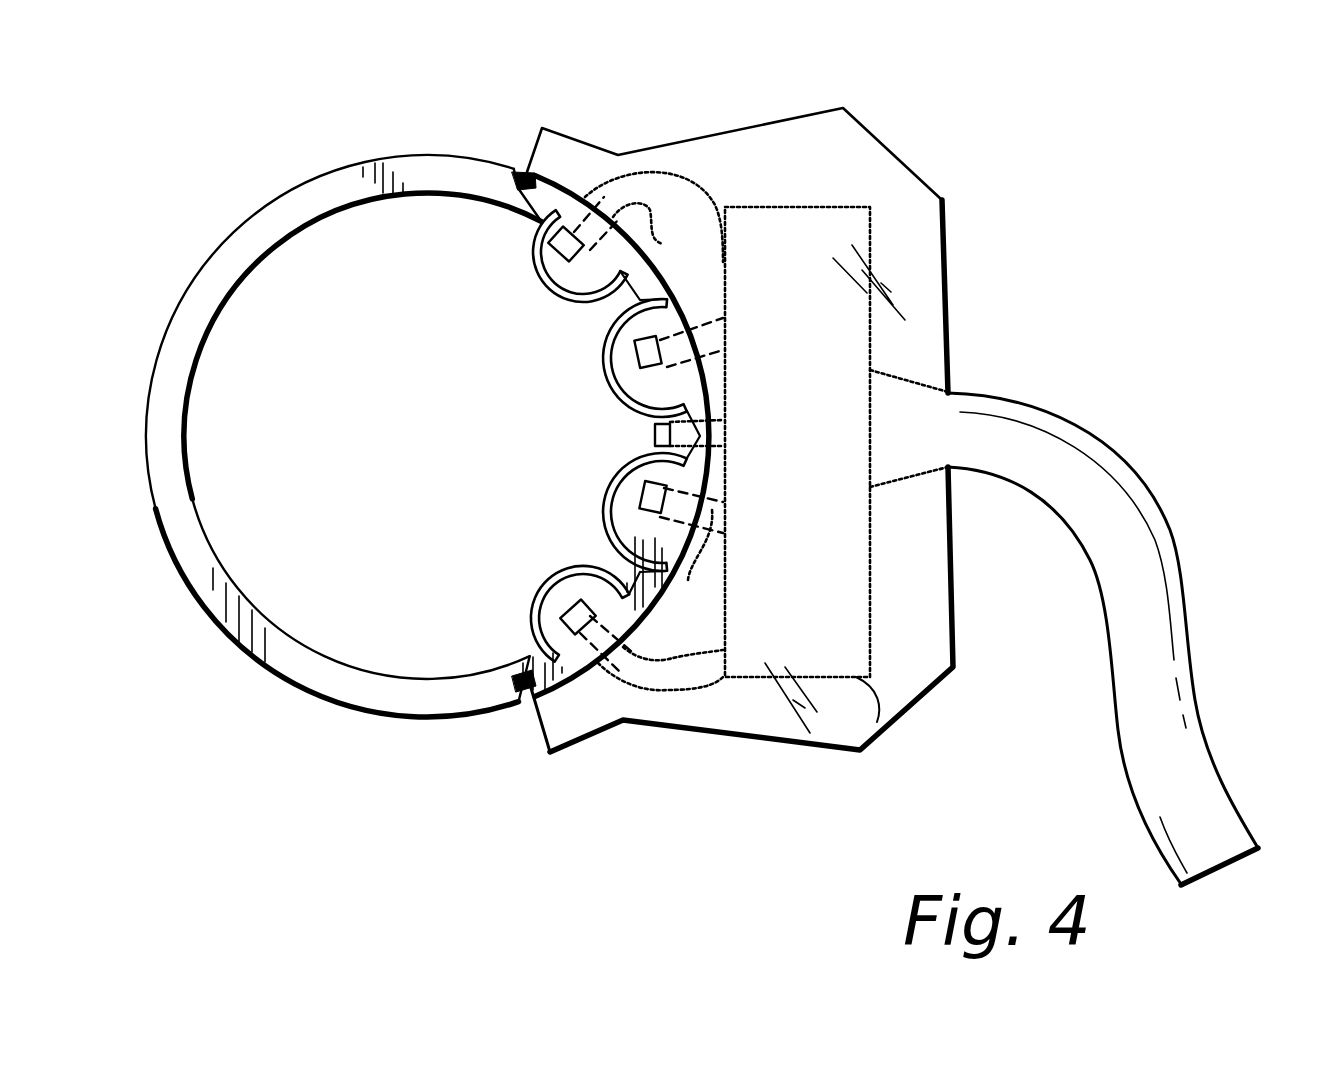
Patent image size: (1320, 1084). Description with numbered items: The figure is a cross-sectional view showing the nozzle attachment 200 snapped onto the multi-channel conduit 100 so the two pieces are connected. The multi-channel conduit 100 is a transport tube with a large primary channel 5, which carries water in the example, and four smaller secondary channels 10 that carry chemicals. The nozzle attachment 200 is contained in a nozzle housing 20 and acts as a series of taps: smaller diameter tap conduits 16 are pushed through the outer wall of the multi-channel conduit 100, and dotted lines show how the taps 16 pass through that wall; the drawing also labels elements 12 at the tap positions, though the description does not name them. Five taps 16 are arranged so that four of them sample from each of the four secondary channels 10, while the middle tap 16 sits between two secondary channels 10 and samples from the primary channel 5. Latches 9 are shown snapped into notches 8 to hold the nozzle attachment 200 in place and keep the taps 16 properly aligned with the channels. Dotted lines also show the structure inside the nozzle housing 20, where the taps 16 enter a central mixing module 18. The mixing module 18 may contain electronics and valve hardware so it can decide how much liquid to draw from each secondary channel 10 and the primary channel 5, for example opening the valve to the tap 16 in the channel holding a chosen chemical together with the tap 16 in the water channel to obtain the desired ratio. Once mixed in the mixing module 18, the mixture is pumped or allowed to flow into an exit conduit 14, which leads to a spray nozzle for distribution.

The multi-channel conduit 100 is at (278, 132).
The nozzle attachment 200 is at (1020, 170).
The primary channel 5 is at (215, 305).
The notch 8 is at (512, 694).
The latch 9 is at (519, 172).
The secondary channel 10 is at (551, 292).
The electrode 12 is at (553, 228).
The exit conduit 14 is at (1141, 474).
The tap conduit 16 is at (643, 657).
The mixing module 18 is at (878, 722).
The nozzle housing 20 is at (858, 127).